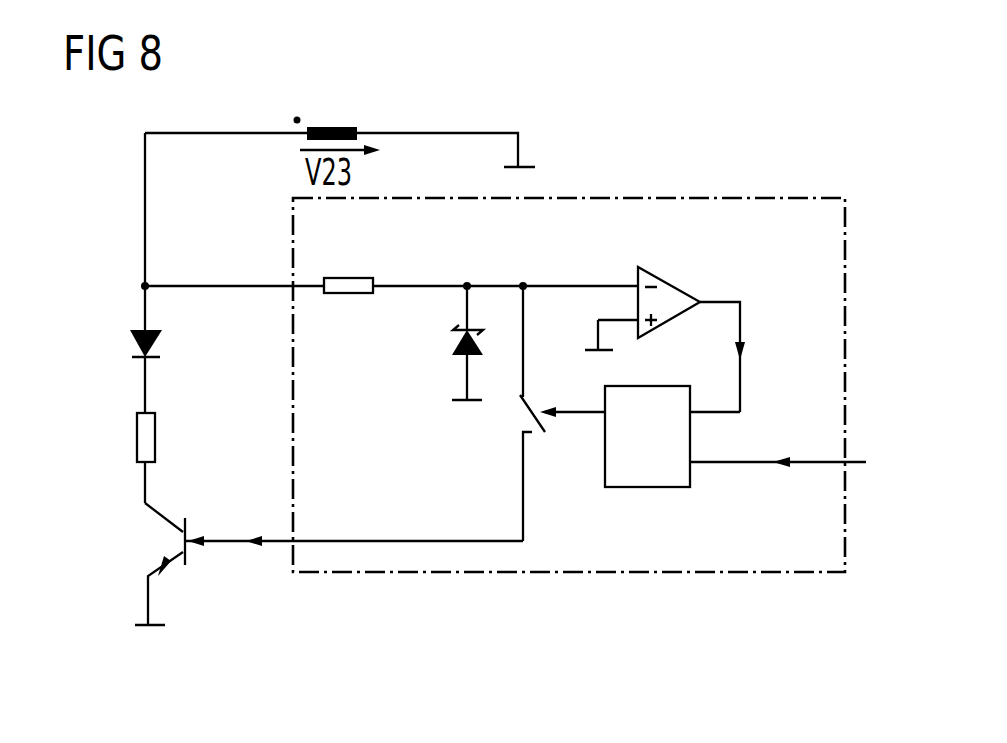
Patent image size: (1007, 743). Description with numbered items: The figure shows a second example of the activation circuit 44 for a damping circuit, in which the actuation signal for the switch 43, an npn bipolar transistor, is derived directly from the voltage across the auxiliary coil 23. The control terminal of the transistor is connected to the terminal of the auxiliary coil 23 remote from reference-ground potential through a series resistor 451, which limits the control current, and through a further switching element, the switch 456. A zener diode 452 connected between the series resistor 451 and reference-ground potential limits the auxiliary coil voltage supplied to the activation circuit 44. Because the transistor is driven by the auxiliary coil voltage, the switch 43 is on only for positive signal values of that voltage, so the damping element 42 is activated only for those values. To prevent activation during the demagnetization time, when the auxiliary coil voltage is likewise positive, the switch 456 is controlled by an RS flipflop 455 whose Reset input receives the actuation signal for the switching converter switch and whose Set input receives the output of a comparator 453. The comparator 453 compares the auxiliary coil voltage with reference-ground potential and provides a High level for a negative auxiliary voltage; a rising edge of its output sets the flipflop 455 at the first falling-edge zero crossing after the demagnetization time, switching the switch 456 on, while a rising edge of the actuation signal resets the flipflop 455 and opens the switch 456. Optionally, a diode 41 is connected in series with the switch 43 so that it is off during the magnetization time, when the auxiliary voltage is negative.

The auxiliary coil 23 is at (330, 127).
The diode 41 is at (137, 345).
The damping element 42 is at (137, 437).
The switch 43 is at (183, 541).
The activation circuit 44 is at (602, 575).
The series resistor 451 is at (348, 278).
The zener diode 452 is at (462, 340).
The comparator 453 is at (668, 285).
The flipflop 455 is at (648, 487).
The switch 456 is at (518, 408).